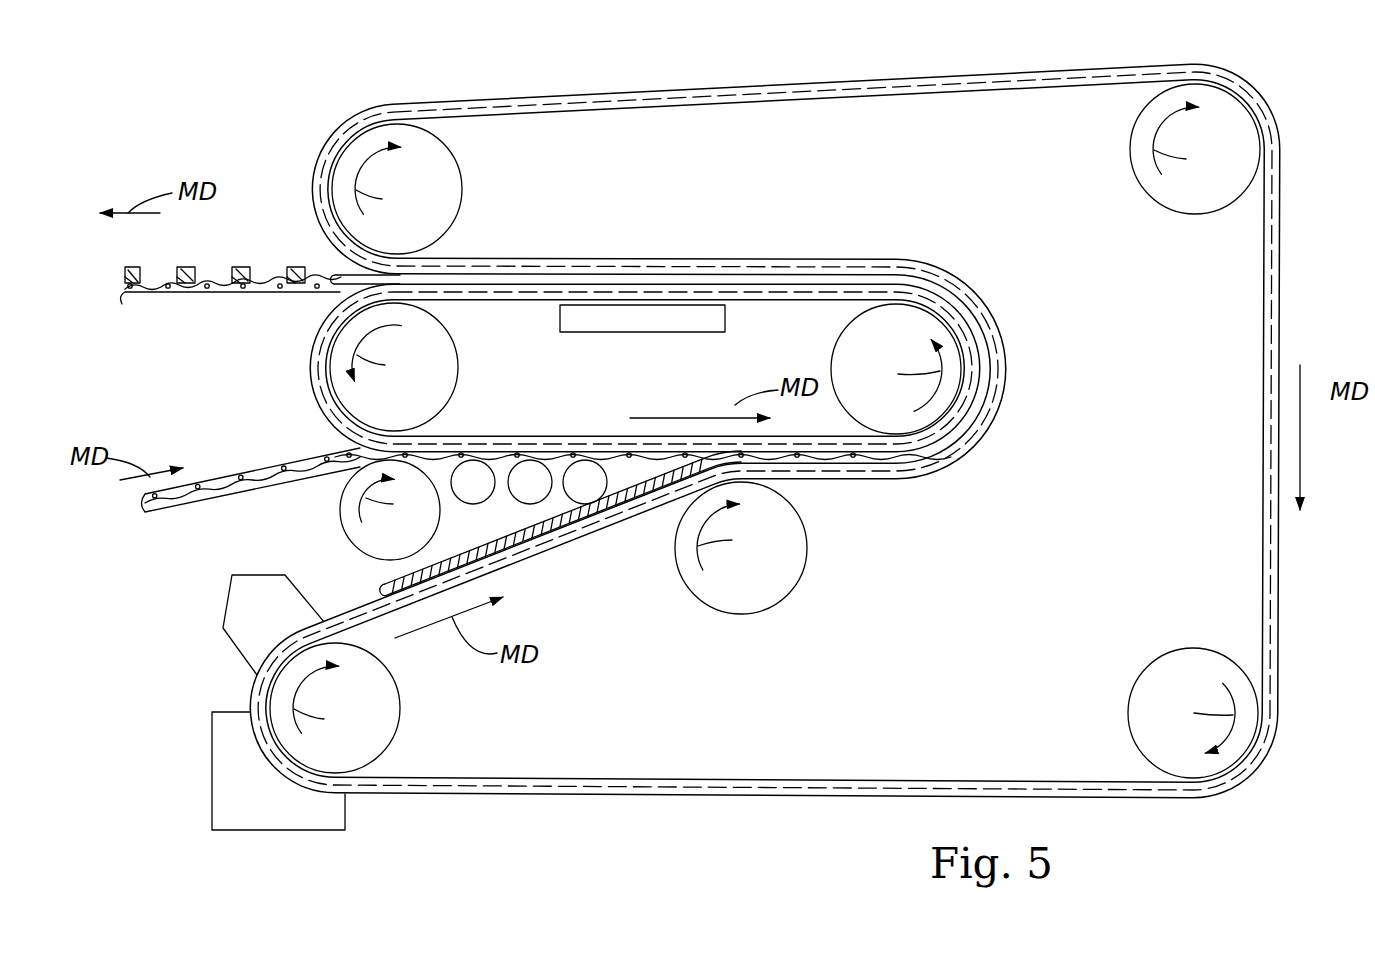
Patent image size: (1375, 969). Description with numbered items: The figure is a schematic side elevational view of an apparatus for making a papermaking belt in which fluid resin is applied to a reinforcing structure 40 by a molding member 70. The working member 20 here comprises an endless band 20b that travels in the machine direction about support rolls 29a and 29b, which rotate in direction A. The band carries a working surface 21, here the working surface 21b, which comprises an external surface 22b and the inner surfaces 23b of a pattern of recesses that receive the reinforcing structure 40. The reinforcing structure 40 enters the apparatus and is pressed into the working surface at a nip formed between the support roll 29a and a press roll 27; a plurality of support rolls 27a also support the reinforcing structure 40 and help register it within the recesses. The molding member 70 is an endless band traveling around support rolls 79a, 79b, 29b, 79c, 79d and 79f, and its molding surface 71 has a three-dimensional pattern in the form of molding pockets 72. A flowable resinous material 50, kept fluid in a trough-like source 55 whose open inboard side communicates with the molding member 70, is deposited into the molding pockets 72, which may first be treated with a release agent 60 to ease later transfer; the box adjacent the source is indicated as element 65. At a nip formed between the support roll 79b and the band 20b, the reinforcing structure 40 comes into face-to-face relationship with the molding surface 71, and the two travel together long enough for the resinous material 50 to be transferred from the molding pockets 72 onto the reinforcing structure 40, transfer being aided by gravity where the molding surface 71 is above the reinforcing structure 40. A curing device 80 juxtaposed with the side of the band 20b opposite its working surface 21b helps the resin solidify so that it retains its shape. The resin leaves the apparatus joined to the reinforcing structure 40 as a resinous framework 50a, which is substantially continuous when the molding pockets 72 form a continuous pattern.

The working member 20 is at (522, 300).
The endless band 20b is at (527, 437).
The working surface 21 is at (300, 362).
The working surface 21b is at (320, 332).
The external surface 22b is at (317, 407).
The inner surfaces of the recesses 23b is at (337, 430).
The press roll 27 is at (370, 532).
The support rolls 27a is at (529, 490).
The support roll 29a is at (428, 413).
The support roll 29b is at (906, 350).
The reinforcing structure 40 is at (195, 290).
The flowable resinous material 50 is at (452, 570).
The resinous framework 50a is at (190, 290).
The source 55 is at (262, 610).
The release agent 60 is at (230, 808).
The vacuum box wall 65 is at (228, 760).
The molding member 70 is at (765, 777).
The molding surface 71 is at (655, 797).
The molding pockets 72 is at (403, 588).
The support roll 79a is at (380, 708).
The support roll 79b is at (765, 583).
The support roll 79c is at (435, 182).
The support roll 79d is at (1187, 185).
The support roll 79f is at (1157, 703).
The curing device 80 is at (648, 333).